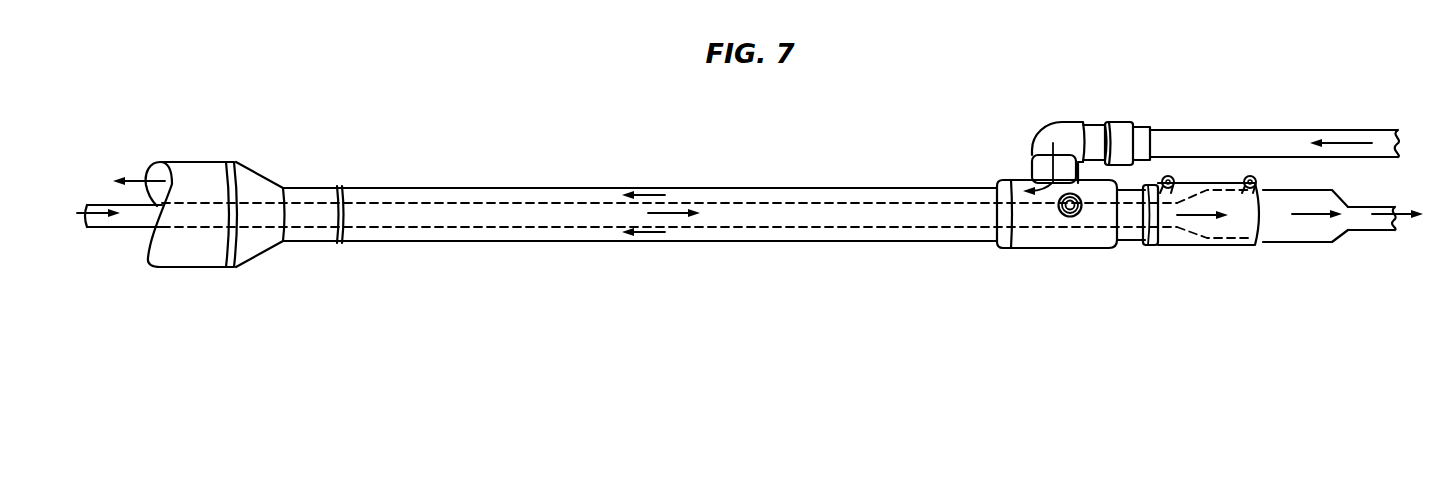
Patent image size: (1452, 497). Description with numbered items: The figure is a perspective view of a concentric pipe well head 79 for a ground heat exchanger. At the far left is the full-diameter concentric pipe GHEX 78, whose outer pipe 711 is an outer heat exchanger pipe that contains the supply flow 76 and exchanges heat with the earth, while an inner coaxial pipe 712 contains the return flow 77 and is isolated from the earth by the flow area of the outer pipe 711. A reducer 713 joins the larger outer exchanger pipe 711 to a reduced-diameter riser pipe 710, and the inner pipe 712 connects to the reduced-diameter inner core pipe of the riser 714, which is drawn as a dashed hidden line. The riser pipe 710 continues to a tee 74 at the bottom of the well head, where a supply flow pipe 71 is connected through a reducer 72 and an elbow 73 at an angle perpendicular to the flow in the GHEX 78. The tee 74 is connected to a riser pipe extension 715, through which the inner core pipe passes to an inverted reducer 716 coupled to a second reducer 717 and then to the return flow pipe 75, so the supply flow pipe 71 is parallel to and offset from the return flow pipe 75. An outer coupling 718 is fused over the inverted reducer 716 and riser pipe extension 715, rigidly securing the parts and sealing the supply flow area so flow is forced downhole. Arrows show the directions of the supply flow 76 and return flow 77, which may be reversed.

The supply flow pipe 71 is at (1262, 129).
The reducer 72 is at (1112, 121).
The elbow 73 is at (1063, 122).
The tee 74 is at (1043, 249).
The return flow pipe 75 is at (1370, 232).
The supply flow 76 is at (140, 181).
The return flow 77 is at (77, 214).
The concentric pipe GHEX 78 is at (294, 299).
The well head 79 is at (1143, 360).
The riser pipe 710 is at (770, 188).
The outer pipe 711 is at (203, 162).
The inner coaxial pipe 712 is at (104, 204).
The reducer 713 is at (264, 172).
The inner core pipe of the riser 714 is at (506, 203).
The riser pipe extension 715 is at (1130, 249).
The inverted reducer 716 is at (1196, 240).
The second reducer 717 is at (1294, 243).
The outer coupling 718 is at (1170, 249).